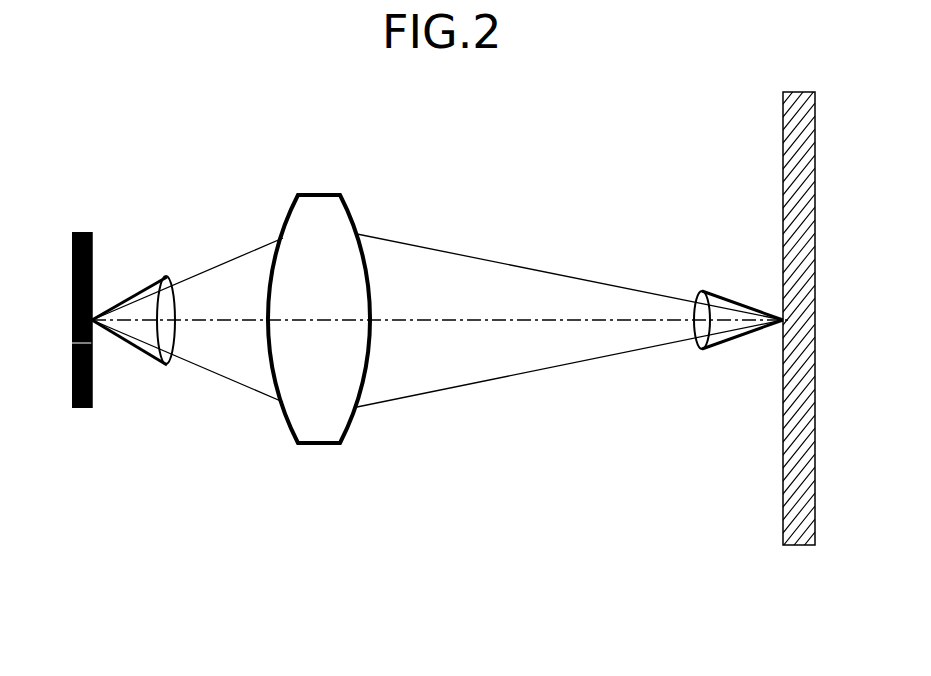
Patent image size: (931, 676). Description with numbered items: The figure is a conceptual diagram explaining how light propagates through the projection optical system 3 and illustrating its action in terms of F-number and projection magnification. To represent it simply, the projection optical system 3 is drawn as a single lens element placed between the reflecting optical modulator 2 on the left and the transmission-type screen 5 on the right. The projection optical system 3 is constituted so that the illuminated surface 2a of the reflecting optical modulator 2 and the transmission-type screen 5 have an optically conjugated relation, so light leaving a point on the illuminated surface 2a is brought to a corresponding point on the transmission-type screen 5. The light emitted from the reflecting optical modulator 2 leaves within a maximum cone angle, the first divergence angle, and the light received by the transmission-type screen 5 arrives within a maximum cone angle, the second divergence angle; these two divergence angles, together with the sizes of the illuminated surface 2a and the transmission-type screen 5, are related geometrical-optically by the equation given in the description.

The reflecting optical modulator 2 is at (80, 409).
The illuminated surface 2a is at (93, 245).
The projection optical system 3 is at (317, 446).
The transmission-type screen 5 is at (800, 546).